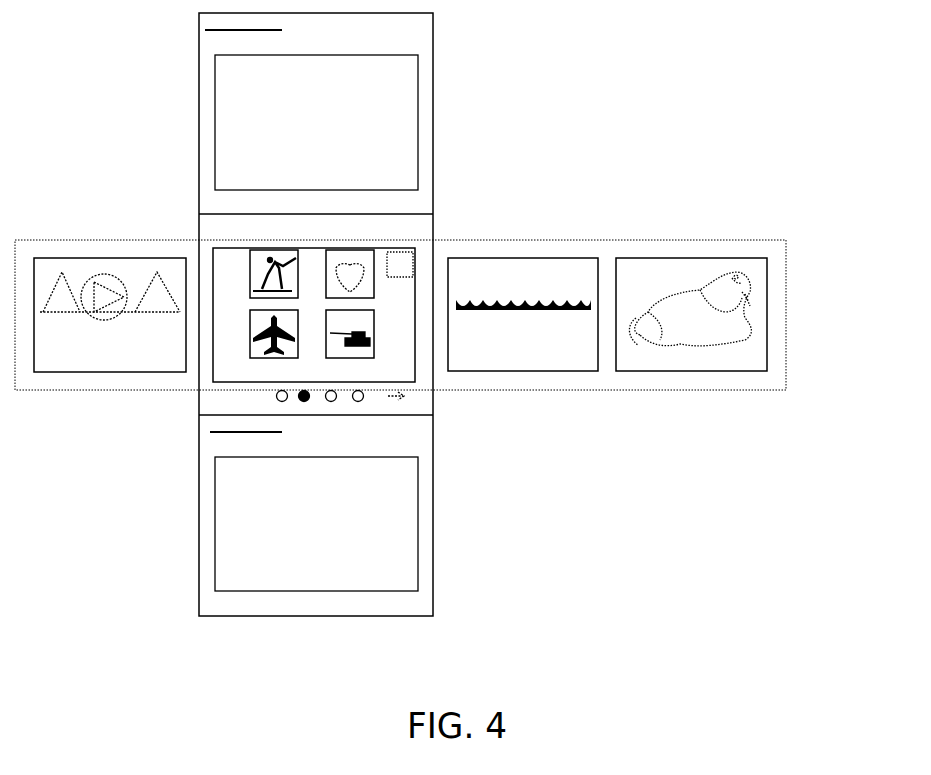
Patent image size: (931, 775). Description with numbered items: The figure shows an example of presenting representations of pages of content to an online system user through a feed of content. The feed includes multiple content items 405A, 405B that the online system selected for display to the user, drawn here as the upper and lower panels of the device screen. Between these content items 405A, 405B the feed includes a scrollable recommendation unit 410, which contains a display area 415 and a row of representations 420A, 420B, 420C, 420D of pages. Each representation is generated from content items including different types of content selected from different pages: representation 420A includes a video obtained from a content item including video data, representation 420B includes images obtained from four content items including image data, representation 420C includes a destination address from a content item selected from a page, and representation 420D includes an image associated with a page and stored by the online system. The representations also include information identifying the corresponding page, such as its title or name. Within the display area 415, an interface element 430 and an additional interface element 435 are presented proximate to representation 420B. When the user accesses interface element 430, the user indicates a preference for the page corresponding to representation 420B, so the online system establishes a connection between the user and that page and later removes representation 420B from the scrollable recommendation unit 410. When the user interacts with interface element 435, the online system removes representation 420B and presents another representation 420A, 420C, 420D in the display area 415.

The content item 405A is at (441, 90).
The content item 405B is at (440, 525).
The scrollable recommendation unit 410 is at (788, 315).
The display area 415 is at (212, 380).
The representation of a page 420A is at (75, 257).
The representation of a page 420B is at (240, 240).
The representation of a page 420C is at (600, 257).
The representation of a page 420D is at (668, 375).
The interface element 430 is at (400, 380).
The additional interface element 435 is at (413, 252).